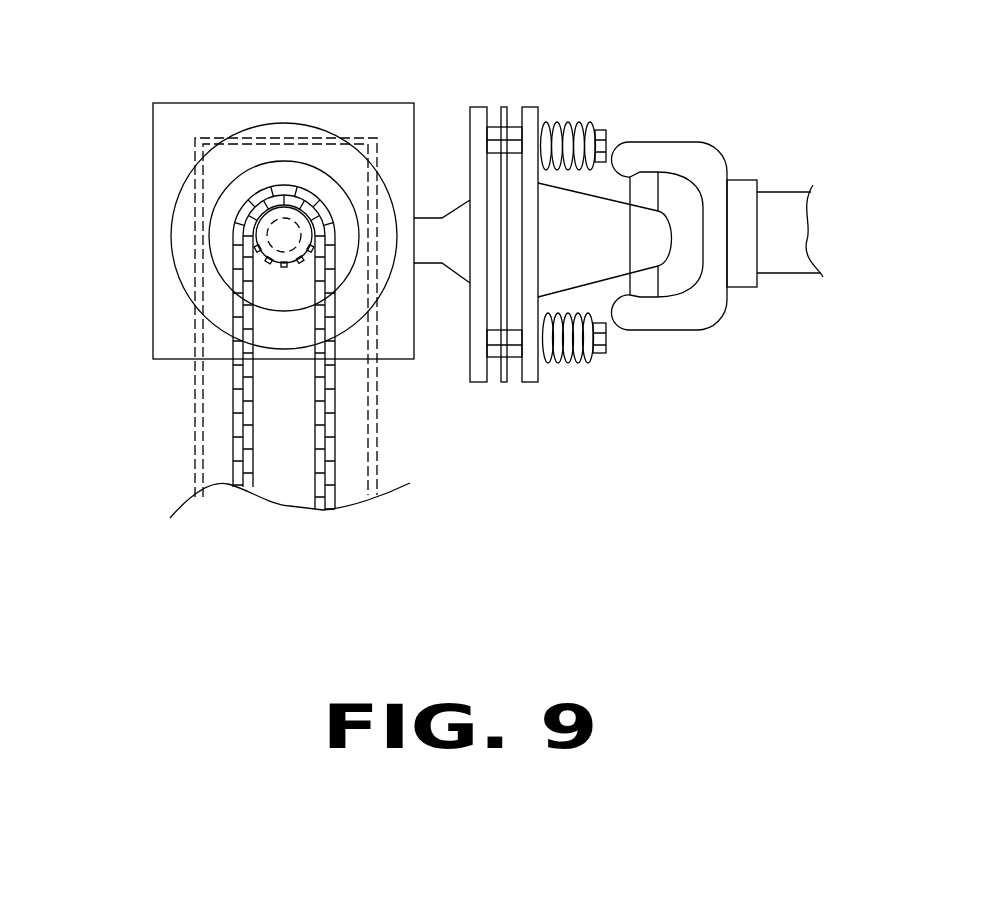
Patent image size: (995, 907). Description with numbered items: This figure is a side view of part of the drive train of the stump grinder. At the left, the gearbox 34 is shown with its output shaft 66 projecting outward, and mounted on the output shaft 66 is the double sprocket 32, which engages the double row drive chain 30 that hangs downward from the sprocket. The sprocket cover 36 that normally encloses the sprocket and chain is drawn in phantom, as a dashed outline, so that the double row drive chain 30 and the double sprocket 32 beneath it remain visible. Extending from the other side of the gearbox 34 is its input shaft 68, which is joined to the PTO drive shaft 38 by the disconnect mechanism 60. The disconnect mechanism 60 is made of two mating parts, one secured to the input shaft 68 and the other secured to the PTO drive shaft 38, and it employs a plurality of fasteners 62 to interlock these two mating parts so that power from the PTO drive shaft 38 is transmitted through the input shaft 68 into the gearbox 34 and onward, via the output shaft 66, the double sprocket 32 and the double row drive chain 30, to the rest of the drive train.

The double row drive chain 30 is at (233, 440).
The double sprocket 32 is at (257, 248).
The gearbox 34 is at (155, 212).
The sprocket cover 36 is at (375, 458).
The PTO drive shaft 38 is at (768, 210).
The disconnect mechanism 60 is at (485, 107).
The fasteners 62 is at (595, 355).
The output shaft 66 is at (270, 220).
The input shaft 68 is at (436, 232).